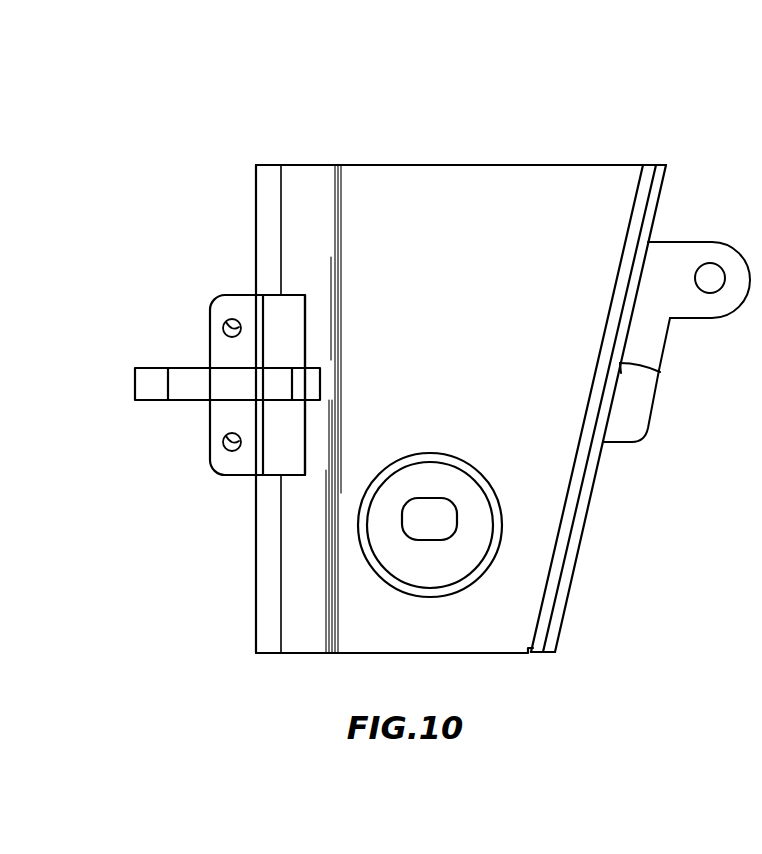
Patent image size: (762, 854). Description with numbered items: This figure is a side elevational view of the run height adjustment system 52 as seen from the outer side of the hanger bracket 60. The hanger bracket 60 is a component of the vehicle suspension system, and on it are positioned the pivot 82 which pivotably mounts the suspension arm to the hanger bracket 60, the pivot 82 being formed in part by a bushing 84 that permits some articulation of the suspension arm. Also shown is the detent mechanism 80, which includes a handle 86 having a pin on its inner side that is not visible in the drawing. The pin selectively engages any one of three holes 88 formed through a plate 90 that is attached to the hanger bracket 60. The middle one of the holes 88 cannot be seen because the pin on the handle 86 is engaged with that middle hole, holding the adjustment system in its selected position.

The run height adjustment system 52 is at (676, 113).
The hanger bracket 60 is at (496, 165).
The detent mechanism 80 is at (298, 313).
The pivot 82 is at (435, 498).
The bushing 84 is at (448, 595).
The handle 86 is at (148, 400).
The holes 88 is at (222, 327).
The plate 90 is at (231, 476).